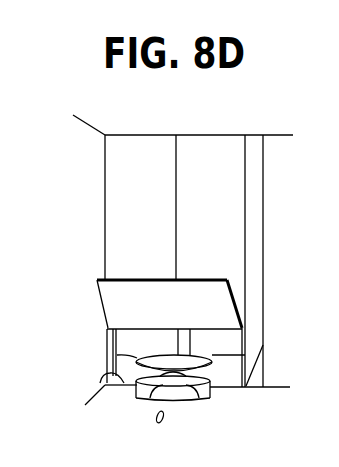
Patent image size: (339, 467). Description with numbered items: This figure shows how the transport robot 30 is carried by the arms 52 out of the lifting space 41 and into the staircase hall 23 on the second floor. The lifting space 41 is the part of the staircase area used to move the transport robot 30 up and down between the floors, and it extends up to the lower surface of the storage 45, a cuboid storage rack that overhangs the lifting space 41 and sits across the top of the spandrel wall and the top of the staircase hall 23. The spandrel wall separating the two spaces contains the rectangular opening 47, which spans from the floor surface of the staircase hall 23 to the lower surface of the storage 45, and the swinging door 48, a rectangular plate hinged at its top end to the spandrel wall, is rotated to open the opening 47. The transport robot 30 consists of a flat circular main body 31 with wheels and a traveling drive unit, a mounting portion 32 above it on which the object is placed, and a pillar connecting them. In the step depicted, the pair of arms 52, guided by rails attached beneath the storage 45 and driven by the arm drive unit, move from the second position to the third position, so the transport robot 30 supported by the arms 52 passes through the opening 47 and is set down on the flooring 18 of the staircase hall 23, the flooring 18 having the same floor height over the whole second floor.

The flooring 18 is at (270, 388).
The staircase hall 23 is at (150, 240).
The transport robot 30 is at (248, 354).
The main body 31 is at (205, 394).
The mounting portion 32 is at (124, 355).
The lifting space 41 is at (163, 351).
The storage 45 is at (254, 170).
The opening 47 is at (103, 383).
The swinging door 48 is at (208, 288).
The arms 52 is at (157, 398).